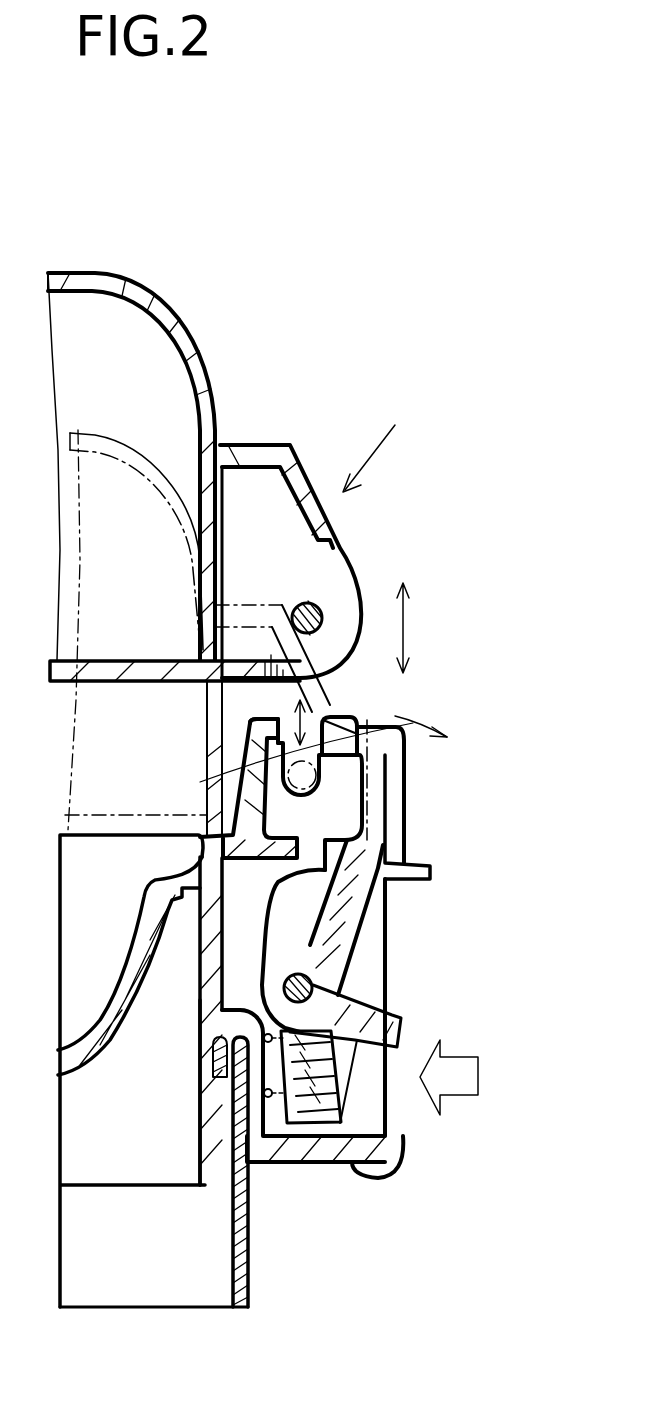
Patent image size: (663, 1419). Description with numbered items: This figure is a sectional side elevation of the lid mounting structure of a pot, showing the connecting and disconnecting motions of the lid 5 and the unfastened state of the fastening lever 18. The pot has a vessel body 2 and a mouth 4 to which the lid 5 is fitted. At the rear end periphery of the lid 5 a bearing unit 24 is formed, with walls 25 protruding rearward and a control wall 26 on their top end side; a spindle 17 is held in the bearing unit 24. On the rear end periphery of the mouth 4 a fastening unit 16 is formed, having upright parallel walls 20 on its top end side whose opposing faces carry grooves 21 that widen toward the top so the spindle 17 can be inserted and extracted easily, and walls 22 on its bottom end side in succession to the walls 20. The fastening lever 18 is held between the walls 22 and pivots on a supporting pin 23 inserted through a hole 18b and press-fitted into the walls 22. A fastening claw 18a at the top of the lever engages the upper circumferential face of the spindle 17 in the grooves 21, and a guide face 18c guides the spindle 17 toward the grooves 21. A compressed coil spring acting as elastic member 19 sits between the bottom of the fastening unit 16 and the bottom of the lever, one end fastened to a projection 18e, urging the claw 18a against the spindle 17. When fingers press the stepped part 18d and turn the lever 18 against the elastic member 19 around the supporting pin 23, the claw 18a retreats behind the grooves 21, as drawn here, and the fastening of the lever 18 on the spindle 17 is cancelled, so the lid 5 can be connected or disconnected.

The vessel body 2 is at (247, 1267).
The mouth 4 is at (230, 937).
The lid 5 is at (185, 318).
The fastening unit 16 is at (413, 1133).
The spindle 17 is at (322, 612).
The fastening lever 18 is at (340, 897).
The fastening claw 18a is at (262, 760).
The hole 18b is at (198, 1010).
The guide face 18c is at (400, 697).
The stepped part 18d is at (390, 1023).
The projection 18e is at (345, 1137).
The elastic member 19 is at (272, 1115).
The walls 20 is at (400, 828).
The grooves 21 is at (362, 718).
The walls 22 is at (380, 1100).
The supporting pin 23 is at (312, 985).
The bearing unit 24 is at (401, 519).
The walls 25 is at (320, 580).
The control wall 26 is at (310, 580).